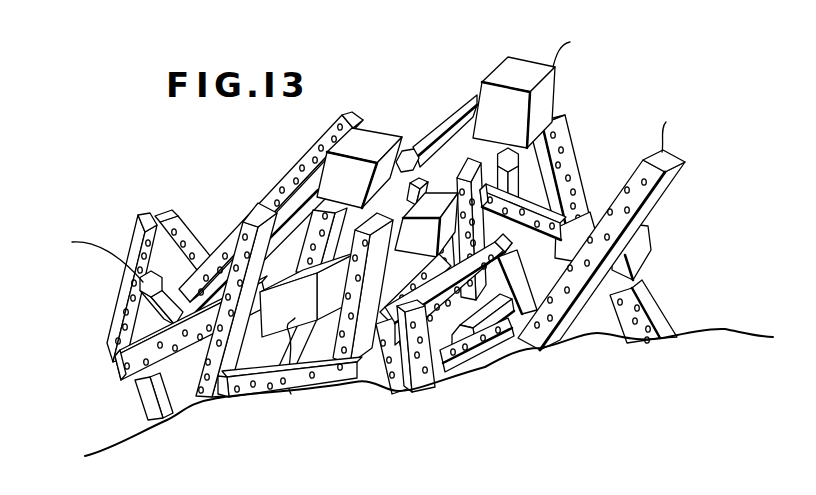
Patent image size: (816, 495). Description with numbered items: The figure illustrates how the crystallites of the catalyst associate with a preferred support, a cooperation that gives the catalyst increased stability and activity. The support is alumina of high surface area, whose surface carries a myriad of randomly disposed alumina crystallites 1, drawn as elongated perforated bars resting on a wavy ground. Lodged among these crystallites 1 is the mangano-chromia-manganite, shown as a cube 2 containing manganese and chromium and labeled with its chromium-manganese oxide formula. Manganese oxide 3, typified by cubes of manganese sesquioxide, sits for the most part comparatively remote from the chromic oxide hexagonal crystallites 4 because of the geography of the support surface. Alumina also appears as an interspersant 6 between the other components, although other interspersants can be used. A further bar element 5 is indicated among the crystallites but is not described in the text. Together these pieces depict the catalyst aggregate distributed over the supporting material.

The alumina crystallites 1 is at (683, 158).
The mangano-chromia-manganite cube 2 is at (309, 316).
The manganese oxide 3 is at (378, 142).
The chromic oxide hexagonal crystallites 4 is at (139, 288).
The elongated grain bar 5 is at (477, 92).
The interspersant 6 is at (137, 232).